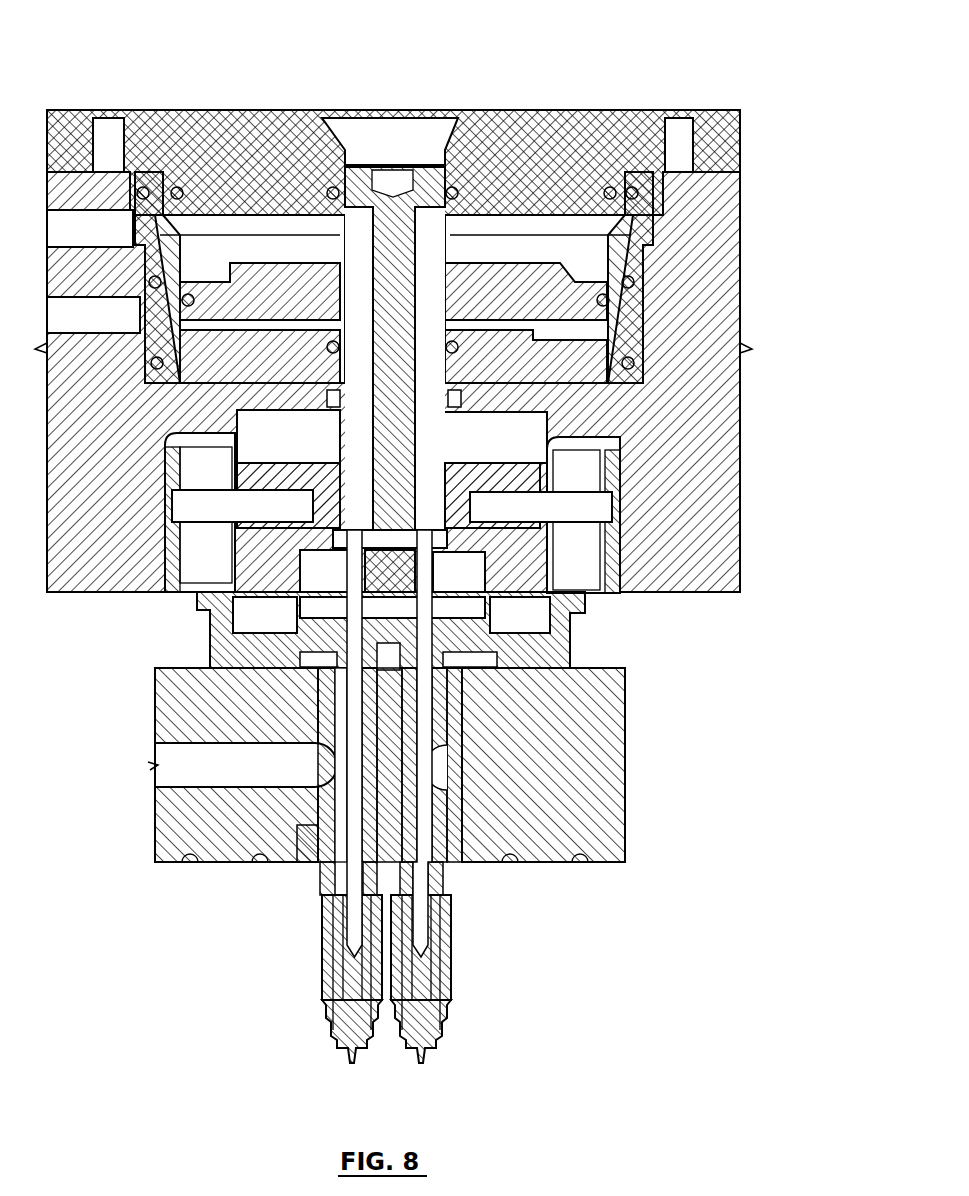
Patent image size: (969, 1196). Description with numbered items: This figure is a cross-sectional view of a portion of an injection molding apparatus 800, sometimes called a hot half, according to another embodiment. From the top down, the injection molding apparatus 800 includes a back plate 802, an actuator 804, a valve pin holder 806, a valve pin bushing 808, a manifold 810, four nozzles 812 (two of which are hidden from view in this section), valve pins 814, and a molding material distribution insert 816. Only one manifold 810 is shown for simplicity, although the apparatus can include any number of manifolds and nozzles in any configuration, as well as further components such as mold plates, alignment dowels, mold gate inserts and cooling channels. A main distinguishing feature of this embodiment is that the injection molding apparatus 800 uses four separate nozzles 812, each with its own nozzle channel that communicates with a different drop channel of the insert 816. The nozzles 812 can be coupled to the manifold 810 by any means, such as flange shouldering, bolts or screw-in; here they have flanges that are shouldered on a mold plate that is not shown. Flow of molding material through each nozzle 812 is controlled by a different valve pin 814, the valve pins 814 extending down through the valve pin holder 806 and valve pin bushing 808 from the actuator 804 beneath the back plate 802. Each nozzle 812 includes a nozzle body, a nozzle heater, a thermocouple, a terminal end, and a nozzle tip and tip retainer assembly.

The injection molding apparatus 800 is at (432, 537).
The back plate 802 is at (710, 220).
The actuator 804 is at (565, 308).
The valve pin holder 806 is at (520, 483).
The valve pin bushing 808 is at (596, 632).
The manifold 810 is at (592, 712).
The nozzles 812 is at (298, 996).
The valve pins 814 is at (330, 916).
The molding material distribution insert 816 is at (478, 793).